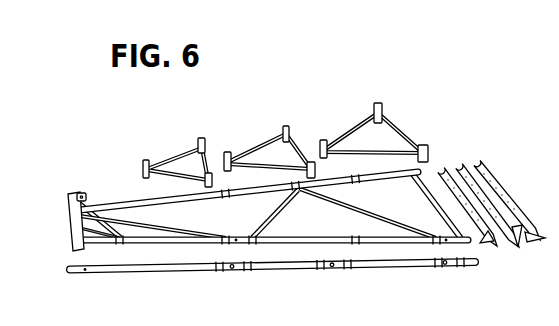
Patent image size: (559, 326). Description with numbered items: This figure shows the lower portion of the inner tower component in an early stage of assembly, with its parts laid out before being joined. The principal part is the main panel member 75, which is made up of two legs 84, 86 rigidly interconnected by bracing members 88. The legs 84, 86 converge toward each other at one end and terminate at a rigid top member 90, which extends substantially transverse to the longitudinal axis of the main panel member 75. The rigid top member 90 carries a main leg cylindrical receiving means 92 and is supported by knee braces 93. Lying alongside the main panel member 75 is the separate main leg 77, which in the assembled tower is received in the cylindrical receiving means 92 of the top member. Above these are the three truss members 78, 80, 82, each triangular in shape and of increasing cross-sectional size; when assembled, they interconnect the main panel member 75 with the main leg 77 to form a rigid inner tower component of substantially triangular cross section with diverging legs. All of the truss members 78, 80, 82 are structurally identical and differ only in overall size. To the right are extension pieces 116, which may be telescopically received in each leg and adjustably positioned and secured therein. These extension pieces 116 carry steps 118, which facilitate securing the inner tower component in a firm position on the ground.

The main panel member 75 is at (130, 206).
The main leg 77 is at (158, 272).
The truss member 78 is at (171, 159).
The truss member 80 is at (263, 141).
The truss member 82 is at (358, 129).
The leg 84 is at (226, 197).
The leg 86 is at (301, 236).
The bracing member 88 is at (367, 212).
The rigid top member 90 is at (71, 214).
The main leg cylindrical receiving means 92 is at (78, 193).
The knee brace 93 is at (76, 237).
The extension piece 116 is at (499, 181).
The step 118 is at (486, 243).